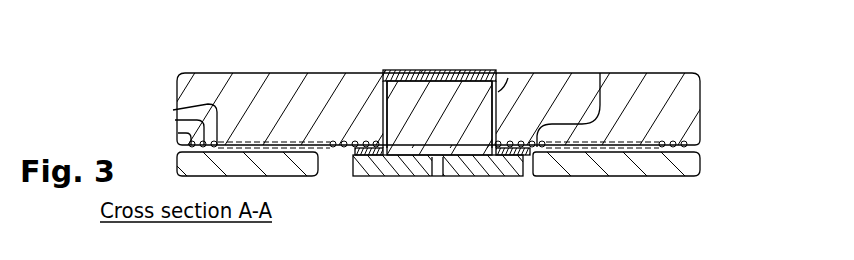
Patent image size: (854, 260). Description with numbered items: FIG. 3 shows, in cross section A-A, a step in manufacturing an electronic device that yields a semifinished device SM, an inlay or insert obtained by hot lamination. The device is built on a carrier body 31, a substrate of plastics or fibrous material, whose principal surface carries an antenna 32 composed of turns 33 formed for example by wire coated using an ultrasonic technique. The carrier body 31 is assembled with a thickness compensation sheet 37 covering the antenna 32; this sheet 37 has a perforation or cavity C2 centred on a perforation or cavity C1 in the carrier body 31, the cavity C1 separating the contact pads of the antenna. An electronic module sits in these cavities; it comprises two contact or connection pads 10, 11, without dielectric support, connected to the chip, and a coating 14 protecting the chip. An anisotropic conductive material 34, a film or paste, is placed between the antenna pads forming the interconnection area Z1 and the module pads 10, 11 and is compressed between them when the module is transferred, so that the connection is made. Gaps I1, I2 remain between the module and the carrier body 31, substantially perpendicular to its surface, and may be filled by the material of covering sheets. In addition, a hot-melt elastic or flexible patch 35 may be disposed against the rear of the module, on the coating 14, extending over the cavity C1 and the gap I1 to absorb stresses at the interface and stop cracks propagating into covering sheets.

The contact pad 10 is at (478, 176).
The connection pad 11 is at (423, 176).
The coating 14 is at (413, 118).
The carrier body 31 is at (686, 98).
The antenna 32 is at (697, 144).
The turns 33 is at (178, 133).
The anisotropic conductive material 34 is at (366, 158).
The elastic or flexible rear patch 35 is at (403, 73).
The compensation sheet 37 is at (686, 168).
The cavity C1 is at (500, 108).
The cavity C2 is at (348, 153).
The interconnection area Z1 is at (600, 73).
The gap I1 is at (508, 78).
The gap I2 is at (350, 157).
The semifinished device SM is at (113, 97).